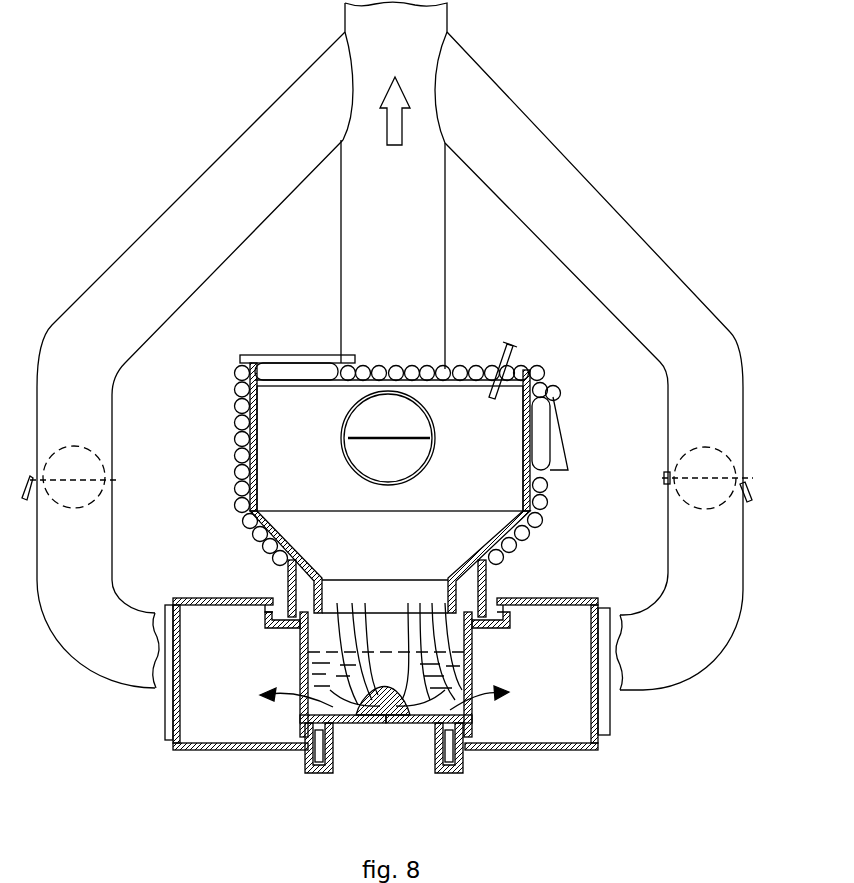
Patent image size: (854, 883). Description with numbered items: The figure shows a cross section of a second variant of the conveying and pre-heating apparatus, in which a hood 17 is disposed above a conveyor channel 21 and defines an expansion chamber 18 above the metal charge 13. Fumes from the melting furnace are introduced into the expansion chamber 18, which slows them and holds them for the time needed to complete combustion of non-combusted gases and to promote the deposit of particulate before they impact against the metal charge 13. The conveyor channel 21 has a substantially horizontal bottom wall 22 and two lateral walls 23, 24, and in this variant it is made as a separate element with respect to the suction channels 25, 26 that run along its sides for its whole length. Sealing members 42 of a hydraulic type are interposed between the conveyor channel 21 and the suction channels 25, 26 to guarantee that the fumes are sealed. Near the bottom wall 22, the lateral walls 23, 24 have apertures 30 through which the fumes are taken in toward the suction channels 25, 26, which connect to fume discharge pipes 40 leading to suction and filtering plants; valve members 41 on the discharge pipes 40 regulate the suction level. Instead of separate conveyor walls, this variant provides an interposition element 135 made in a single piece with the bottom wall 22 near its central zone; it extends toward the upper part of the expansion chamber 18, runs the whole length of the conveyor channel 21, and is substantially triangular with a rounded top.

The metal charge 13 is at (388, 690).
The hood 17 is at (233, 403).
The expansion chamber 18 is at (262, 489).
The conveyor channel 21 is at (417, 728).
The bottom wall 22 is at (338, 727).
The lateral wall 23 is at (302, 657).
The lateral wall 24 is at (472, 657).
The suction pipe 25 is at (240, 750).
The suction pipe 26 is at (570, 750).
The apertures 30 is at (300, 713).
The fume discharge pipe 40 is at (208, 197).
The valve member 41 is at (84, 464).
The sealing member 42 is at (265, 601).
The interposition element 135 is at (388, 710).